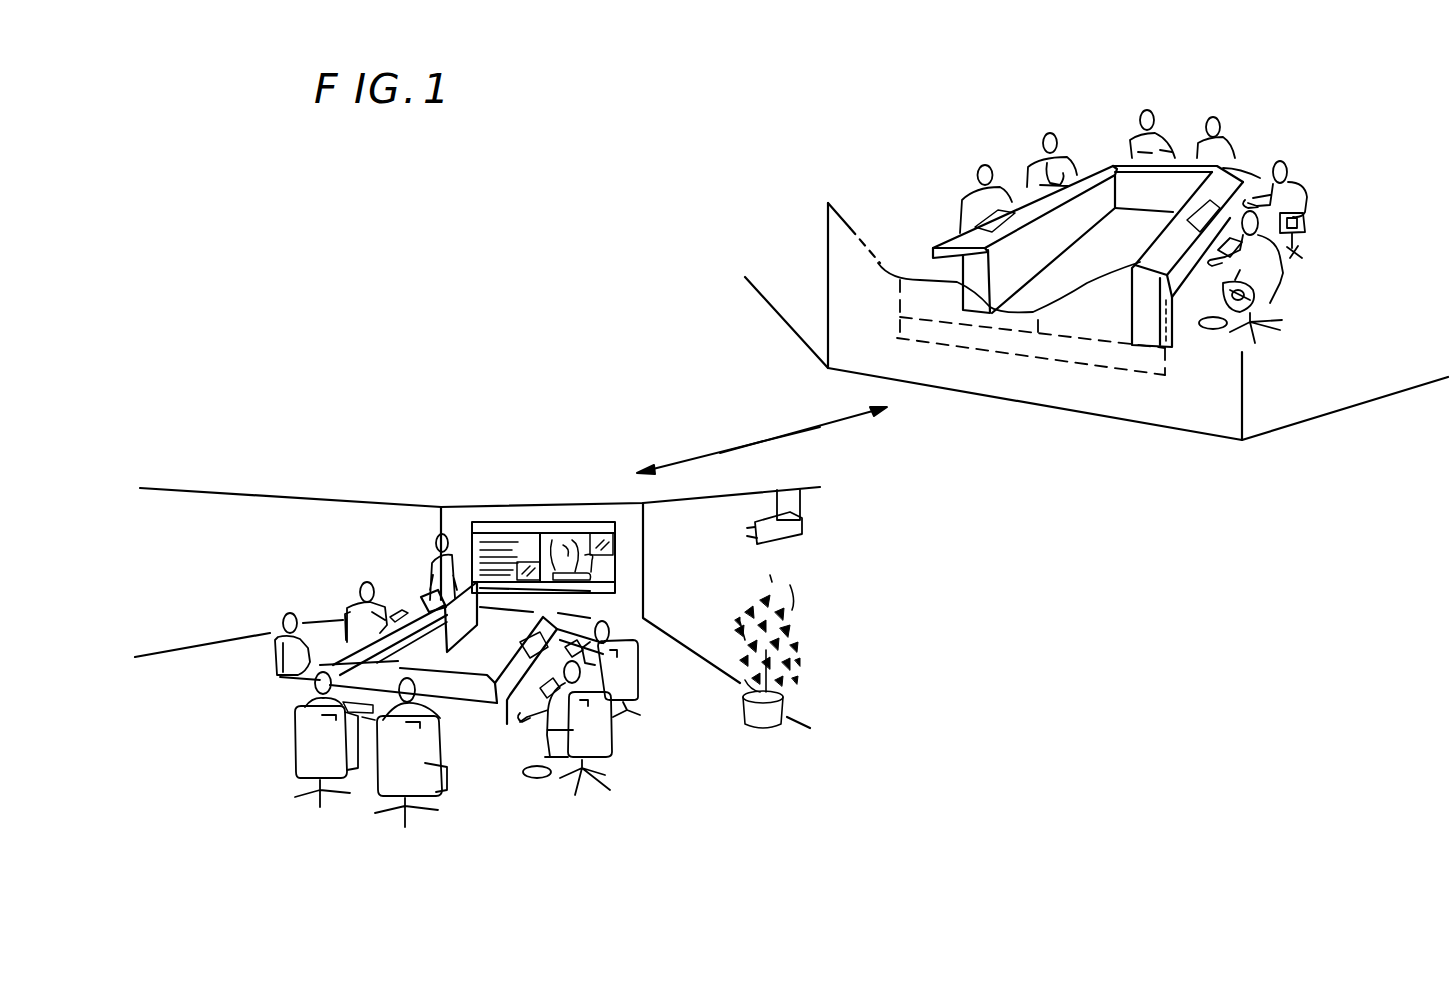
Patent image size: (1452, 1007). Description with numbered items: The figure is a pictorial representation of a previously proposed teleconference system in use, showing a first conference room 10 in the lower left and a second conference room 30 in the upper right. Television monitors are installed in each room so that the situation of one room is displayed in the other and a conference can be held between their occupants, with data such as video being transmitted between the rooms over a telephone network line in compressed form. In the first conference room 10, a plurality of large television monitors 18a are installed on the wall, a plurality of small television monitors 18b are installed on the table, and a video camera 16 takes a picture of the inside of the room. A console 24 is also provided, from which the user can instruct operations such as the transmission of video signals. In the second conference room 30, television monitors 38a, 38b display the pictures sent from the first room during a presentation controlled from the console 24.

The first conference room 10 is at (790, 577).
The video camera 16 is at (803, 527).
The large television monitors 18a is at (555, 535).
The small television monitors 18b is at (540, 705).
The console 24 is at (415, 600).
The second conference room 30 is at (930, 172).
The television monitor 38a is at (1013, 320).
The television monitor 38b is at (1253, 178).